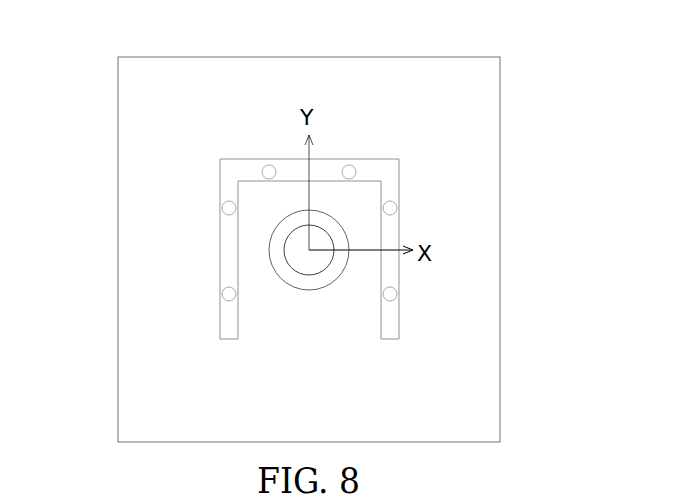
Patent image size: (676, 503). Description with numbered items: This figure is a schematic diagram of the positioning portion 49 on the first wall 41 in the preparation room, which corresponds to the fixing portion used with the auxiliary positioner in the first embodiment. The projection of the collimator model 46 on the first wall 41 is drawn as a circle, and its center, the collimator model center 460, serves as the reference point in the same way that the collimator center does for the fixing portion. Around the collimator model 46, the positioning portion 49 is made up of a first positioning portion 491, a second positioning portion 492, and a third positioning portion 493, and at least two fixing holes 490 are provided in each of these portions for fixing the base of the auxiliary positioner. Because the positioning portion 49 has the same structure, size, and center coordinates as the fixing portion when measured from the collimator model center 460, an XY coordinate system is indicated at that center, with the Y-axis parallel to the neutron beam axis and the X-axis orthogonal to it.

The first wall 41 is at (250, 91).
The positioning portion 49 is at (236, 166).
The fixing holes 490 is at (225, 207).
The first positioning portion 491 is at (322, 167).
The second positioning portion 492 is at (228, 256).
The third positioning portion 493 is at (395, 278).
The collimator model 46 is at (328, 225).
The collimator model center 460 is at (303, 252).